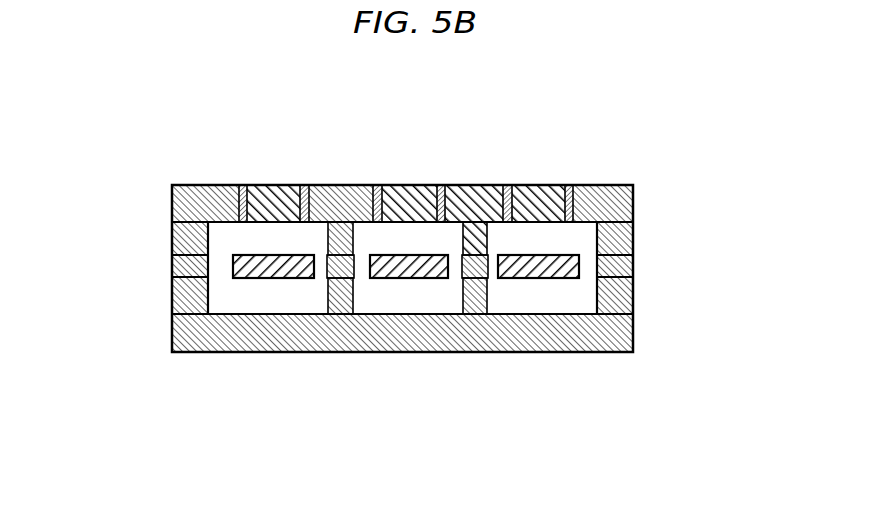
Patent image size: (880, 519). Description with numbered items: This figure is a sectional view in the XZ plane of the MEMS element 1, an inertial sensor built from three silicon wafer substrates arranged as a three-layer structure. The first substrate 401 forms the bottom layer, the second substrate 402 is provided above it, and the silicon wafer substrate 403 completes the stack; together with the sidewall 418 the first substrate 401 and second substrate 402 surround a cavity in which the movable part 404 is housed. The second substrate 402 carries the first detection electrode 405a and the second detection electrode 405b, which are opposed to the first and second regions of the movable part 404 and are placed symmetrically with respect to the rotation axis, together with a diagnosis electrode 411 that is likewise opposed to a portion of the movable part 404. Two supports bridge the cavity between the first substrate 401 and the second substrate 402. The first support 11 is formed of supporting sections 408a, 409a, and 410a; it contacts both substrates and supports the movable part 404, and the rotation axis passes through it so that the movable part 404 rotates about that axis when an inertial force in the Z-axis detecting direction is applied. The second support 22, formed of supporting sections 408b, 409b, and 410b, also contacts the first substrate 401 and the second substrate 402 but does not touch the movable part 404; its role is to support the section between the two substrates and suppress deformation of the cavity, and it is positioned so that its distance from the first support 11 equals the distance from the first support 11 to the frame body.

The MEMS element 1 is at (116, 149).
The first substrate 401 is at (615, 334).
The second substrate 402 is at (615, 210).
The silicon wafer substrate 403 is at (615, 270).
The movable part 404 is at (233, 278).
The first detection electrode 405a is at (423, 184).
The second detection electrode 405b is at (560, 184).
The supporting section 408a is at (475, 283).
The supporting section 408b is at (340, 297).
The supporting section 409a is at (477, 270).
The supporting section 409b is at (347, 262).
The supporting section 410a is at (487, 234).
The supporting section 410b is at (328, 248).
The diagnosis electrode 411 is at (258, 186).
The sidewall 418 is at (152, 225).
The second support 22 is at (400, 427).
The first support 11 is at (635, 427).